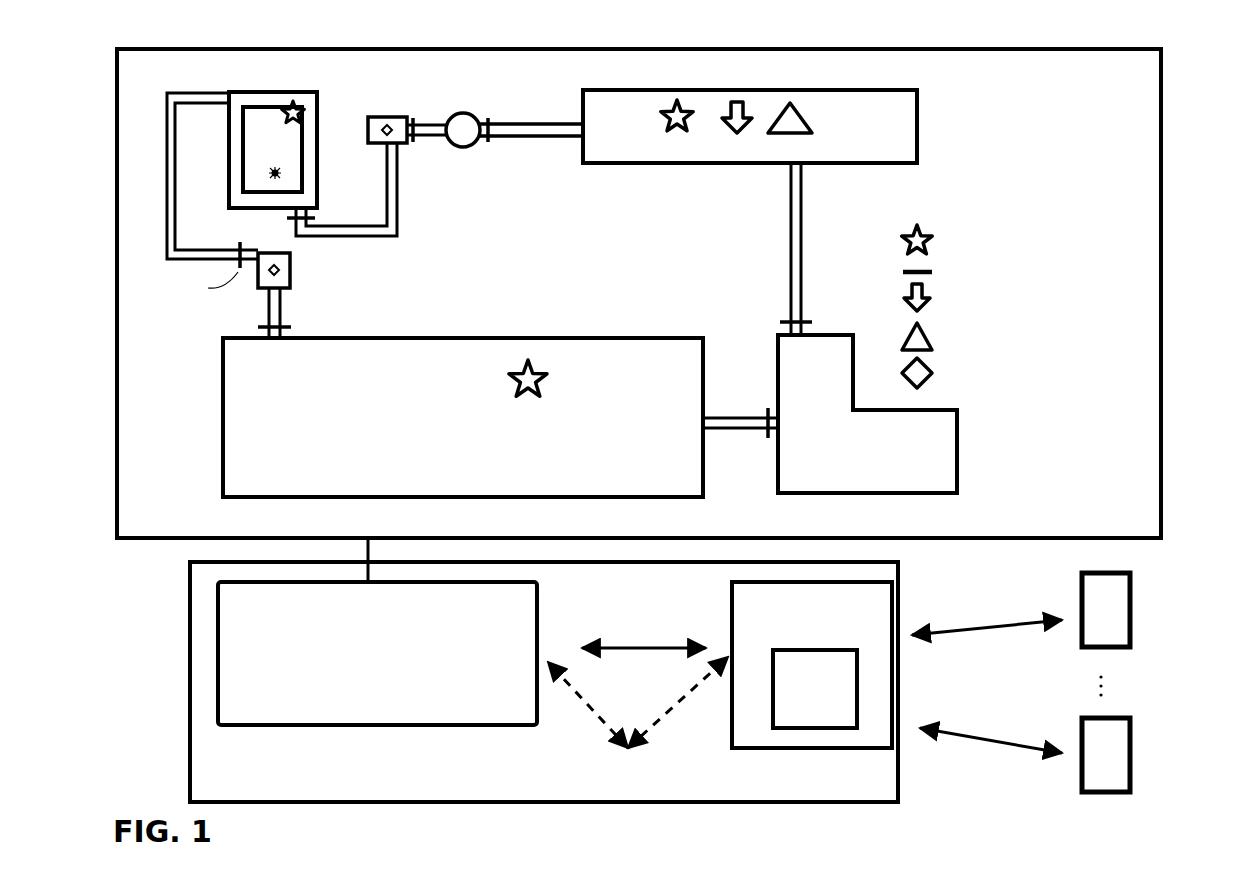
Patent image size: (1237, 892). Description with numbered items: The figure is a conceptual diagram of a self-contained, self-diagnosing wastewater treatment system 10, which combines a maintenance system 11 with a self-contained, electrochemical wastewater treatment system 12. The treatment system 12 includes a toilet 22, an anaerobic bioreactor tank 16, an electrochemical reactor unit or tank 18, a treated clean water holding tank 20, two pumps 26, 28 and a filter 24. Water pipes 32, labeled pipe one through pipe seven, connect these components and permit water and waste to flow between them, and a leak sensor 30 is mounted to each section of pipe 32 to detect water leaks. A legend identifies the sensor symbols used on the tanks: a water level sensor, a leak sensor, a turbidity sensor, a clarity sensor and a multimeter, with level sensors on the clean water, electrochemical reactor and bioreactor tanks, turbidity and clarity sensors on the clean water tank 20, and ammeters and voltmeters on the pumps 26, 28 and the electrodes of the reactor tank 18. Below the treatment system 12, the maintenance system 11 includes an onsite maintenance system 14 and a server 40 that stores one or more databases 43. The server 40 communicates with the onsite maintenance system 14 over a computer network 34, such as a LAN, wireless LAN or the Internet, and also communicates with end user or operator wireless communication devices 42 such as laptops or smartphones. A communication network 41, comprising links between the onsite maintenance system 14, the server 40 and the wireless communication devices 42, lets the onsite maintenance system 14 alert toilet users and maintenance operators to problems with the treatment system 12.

The self-contained, self-diagnosing wastewater treatment system 10 is at (635, 413).
The maintenance system 11 is at (180, 704).
The self-contained, electrochemical wastewater treatment system 12 is at (175, 543).
The onsite maintenance system 14 is at (377, 653).
The anaerobic bioreactor tank 16 is at (463, 417).
The electrochemical reactor unit or tank 18 is at (273, 150).
The treated clean water holding tank 20 is at (750, 126).
The toilet 22 is at (867, 414).
The filter 24 is at (460, 113).
The pump 26 is at (292, 258).
The pump 28 is at (378, 117).
The leak sensor 30 is at (493, 138).
The water pipes 32 is at (192, 90).
The computer network 34 is at (658, 653).
The server 40 is at (812, 665).
The communication network 41 is at (628, 752).
The wireless communication devices 42 is at (1134, 619).
The database 43 is at (815, 689).